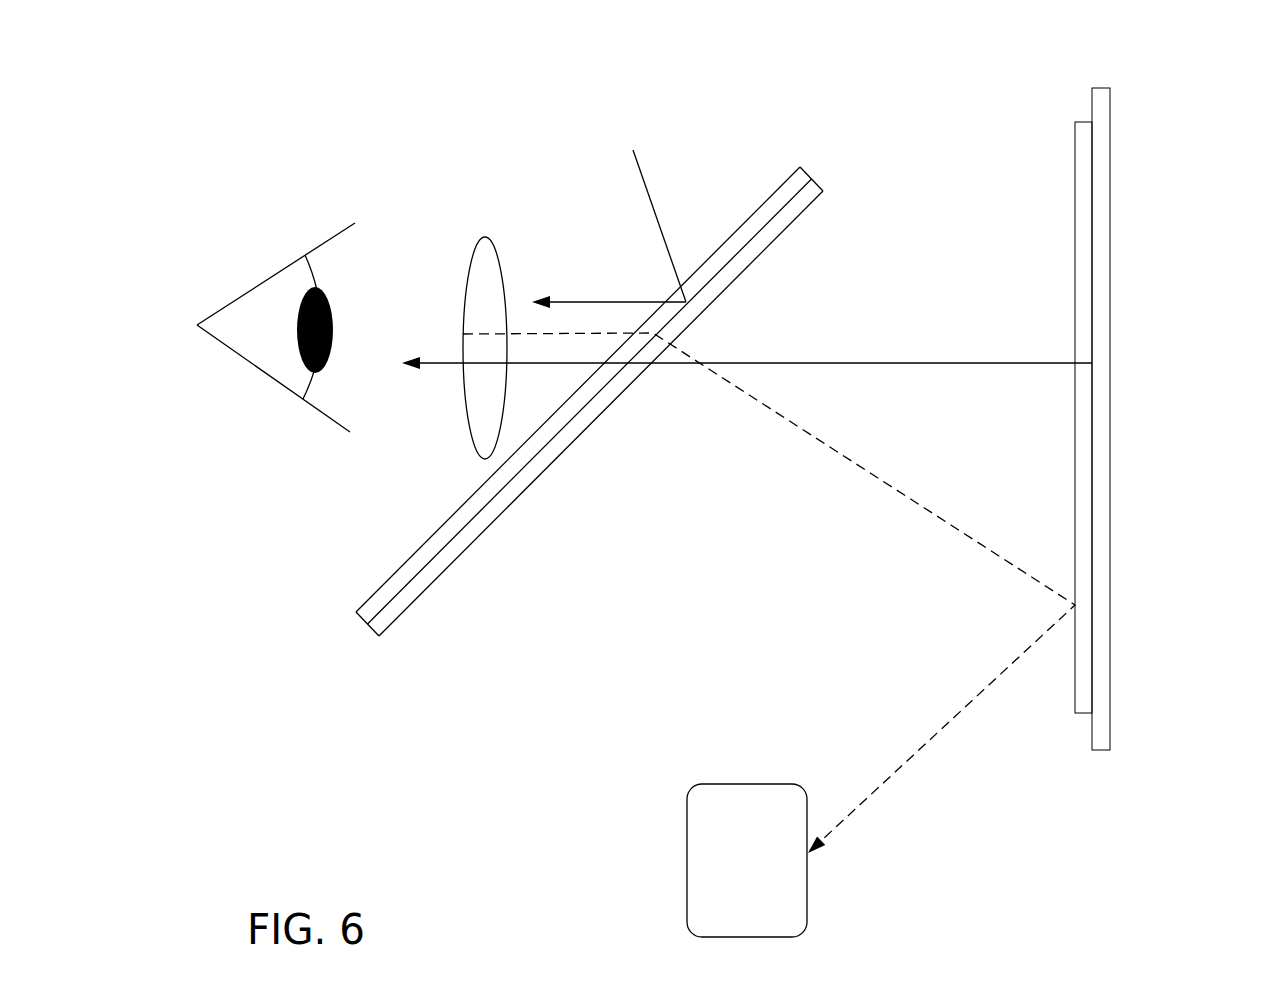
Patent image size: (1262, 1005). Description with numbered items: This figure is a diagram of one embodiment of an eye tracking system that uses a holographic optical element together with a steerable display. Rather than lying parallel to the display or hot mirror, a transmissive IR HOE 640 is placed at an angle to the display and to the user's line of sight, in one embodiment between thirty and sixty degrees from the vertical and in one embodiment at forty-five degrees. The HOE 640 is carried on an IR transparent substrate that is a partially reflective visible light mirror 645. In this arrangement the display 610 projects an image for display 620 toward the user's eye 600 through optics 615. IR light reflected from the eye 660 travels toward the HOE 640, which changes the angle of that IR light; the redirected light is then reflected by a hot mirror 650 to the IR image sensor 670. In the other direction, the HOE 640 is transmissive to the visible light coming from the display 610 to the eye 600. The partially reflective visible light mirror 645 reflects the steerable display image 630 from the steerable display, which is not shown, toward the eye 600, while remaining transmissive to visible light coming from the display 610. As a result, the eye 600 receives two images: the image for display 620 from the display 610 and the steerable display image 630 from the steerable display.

The eye 600 is at (276, 311).
The display 610 is at (1121, 278).
The optics 615 is at (469, 324).
The image for display 620 is at (747, 339).
The steerable display image 630 is at (607, 229).
The transmissive IR HOE 640 is at (751, 200).
The partially reflective visible light mirror 645 is at (426, 612).
The hot mirror 650 is at (1063, 166).
The IR light reflected from the eye 660 is at (769, 593).
The IR image sensor 670 is at (747, 860).